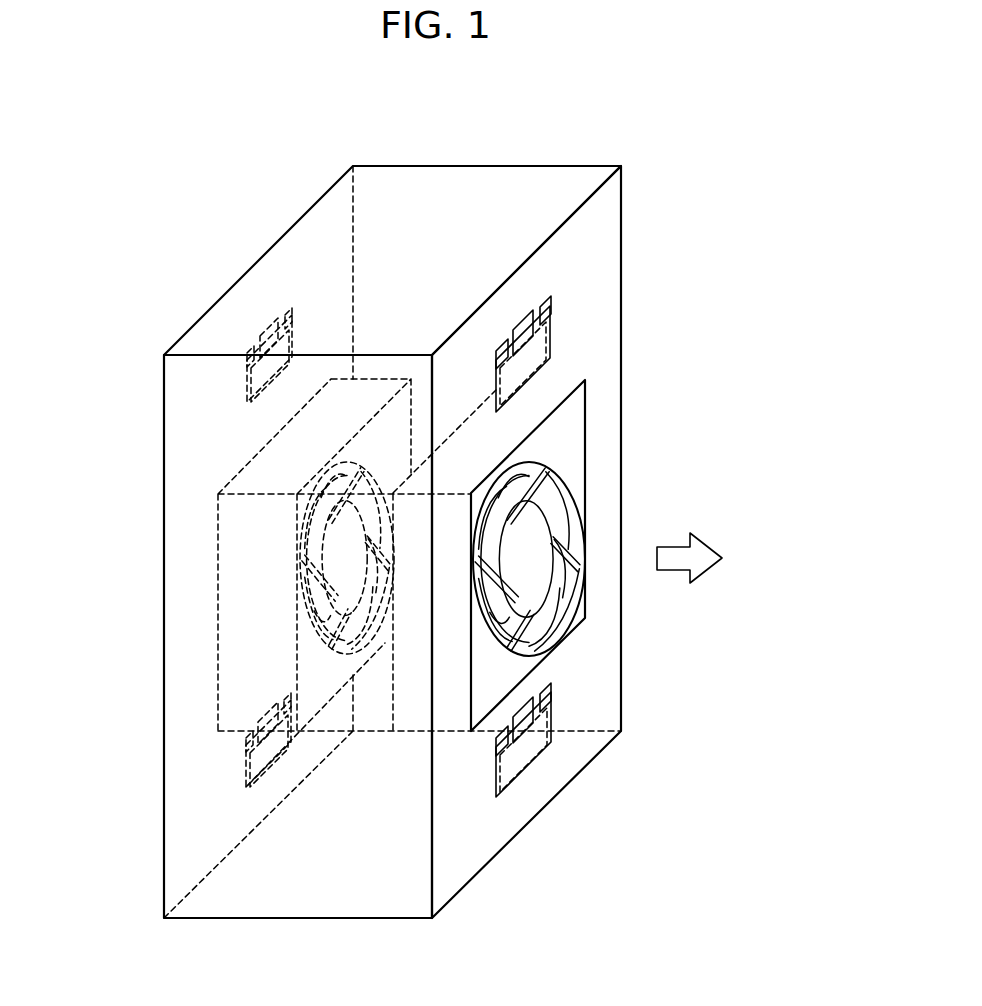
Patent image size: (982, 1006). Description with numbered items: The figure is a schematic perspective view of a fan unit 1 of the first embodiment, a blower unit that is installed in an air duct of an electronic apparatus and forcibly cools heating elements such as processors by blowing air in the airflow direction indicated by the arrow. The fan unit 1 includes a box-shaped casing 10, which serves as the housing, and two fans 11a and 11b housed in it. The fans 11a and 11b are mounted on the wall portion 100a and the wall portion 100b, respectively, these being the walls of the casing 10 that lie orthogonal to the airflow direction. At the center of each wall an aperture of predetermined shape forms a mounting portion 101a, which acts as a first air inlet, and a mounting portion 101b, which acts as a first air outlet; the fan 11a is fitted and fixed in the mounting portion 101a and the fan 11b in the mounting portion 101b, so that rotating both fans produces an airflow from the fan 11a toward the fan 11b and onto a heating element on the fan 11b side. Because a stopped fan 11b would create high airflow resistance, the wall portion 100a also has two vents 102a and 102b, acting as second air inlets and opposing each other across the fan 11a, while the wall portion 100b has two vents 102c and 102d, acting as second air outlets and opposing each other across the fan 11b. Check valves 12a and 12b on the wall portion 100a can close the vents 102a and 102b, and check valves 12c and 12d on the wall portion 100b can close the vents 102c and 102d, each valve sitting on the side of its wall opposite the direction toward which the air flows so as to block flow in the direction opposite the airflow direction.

The fan unit 1 is at (596, 103).
The casing 10 is at (453, 150).
The wall portion 100a is at (146, 722).
The wall portion 100b is at (615, 242).
The fan 11a is at (196, 561).
The fan 11b is at (608, 498).
The mounting portion 101a is at (218, 612).
The mounting portion 101b is at (570, 641).
The check valve 12a is at (248, 338).
The check valve 12b is at (229, 786).
The check valve 12c is at (566, 325).
The check valve 12d is at (567, 715).
The vent 102a is at (247, 378).
The vent 102b is at (246, 762).
The vent 102c is at (542, 373).
The vent 102d is at (534, 765).